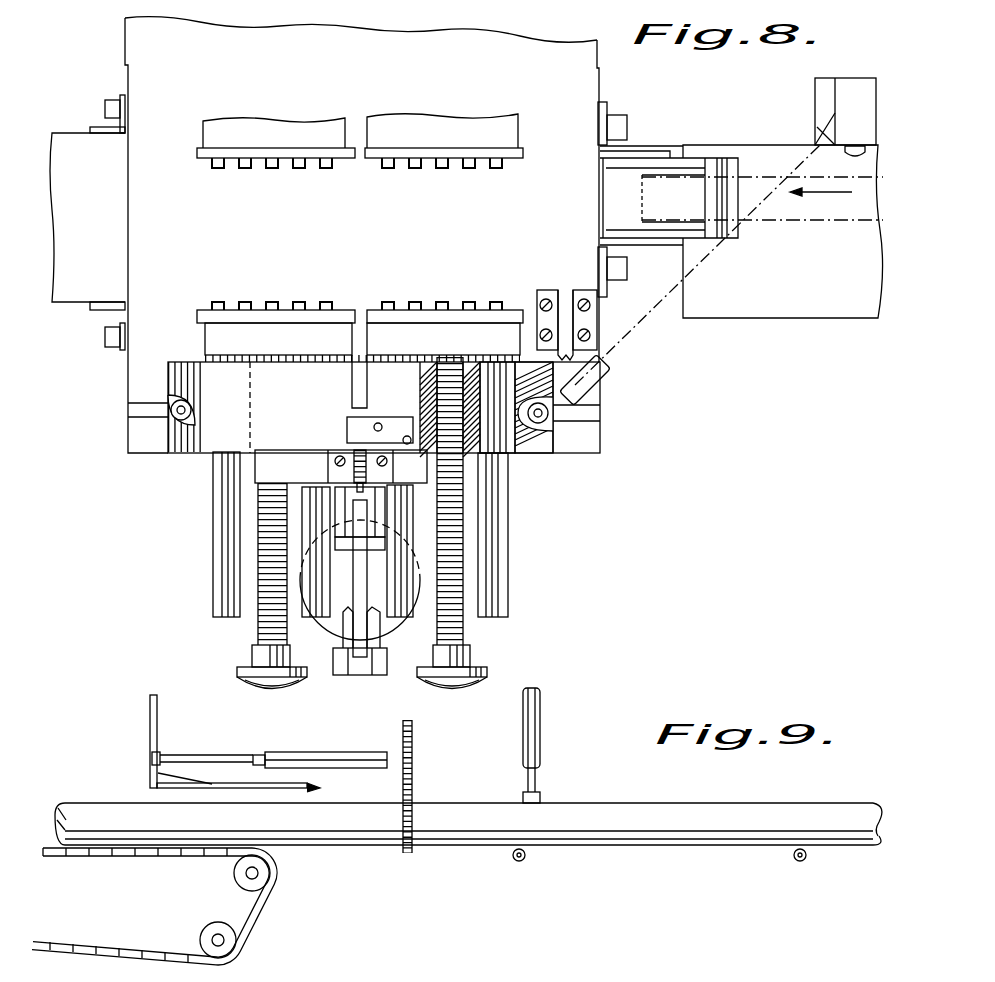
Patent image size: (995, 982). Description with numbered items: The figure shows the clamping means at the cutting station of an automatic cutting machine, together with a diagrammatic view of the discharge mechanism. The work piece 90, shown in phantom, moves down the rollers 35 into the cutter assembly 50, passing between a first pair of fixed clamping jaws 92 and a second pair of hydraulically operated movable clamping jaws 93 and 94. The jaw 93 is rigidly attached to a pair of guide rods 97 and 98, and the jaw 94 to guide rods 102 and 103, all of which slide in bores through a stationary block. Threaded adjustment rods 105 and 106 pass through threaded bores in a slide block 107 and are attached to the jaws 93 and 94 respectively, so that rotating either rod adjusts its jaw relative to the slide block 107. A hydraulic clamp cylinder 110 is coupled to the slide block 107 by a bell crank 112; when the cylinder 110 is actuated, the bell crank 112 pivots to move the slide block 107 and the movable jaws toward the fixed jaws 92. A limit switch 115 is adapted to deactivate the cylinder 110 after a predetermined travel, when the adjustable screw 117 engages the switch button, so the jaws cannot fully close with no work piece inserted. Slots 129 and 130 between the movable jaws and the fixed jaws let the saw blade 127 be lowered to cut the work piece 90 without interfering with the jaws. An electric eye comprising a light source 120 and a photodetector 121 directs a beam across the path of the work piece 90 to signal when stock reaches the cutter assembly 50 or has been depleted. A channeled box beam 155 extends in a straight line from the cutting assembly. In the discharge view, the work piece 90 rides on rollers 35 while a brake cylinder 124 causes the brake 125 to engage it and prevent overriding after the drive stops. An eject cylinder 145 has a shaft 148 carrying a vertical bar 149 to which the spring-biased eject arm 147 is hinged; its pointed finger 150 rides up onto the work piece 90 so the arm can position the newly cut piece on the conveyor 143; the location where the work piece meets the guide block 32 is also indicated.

In FIG. 8, the guide block 32 is at (762, 318).
In FIG. 8, the rollers 35 is at (710, 170).
In FIG. 9, the rollers 35 is at (525, 860).
In FIG. 8, the cutter assembly 50 is at (617, 437).
In FIG. 8, the work piece 90 is at (807, 220).
In FIG. 9, the work piece 90 is at (660, 853).
In FIG. 8, the fixed clamping jaws 92 is at (278, 168).
In FIG. 8, the movable clamping jaw 93 is at (233, 302).
In FIG. 8, the movable clamping jaw 94 is at (397, 300).
In FIG. 8, the guide rod 97 is at (213, 577).
In FIG. 8, the guide rod 98 is at (305, 520).
In FIG. 8, the guide rod 102 is at (410, 517).
In FIG. 8, the guide rod 103 is at (510, 552).
In FIG. 8, the threaded adjustment rod 105 is at (257, 633).
In FIG. 8, the threaded adjustment rod 106 is at (467, 640).
In FIG. 8, the slide block 107 is at (257, 462).
In FIG. 8, the hydraulic clamp cylinder 110 is at (400, 657).
In FIG. 8, the bell crank 112 is at (365, 587).
In FIG. 8, the limit switch 115 is at (350, 427).
In FIG. 8, the adjustable screw 117 is at (357, 453).
In FIG. 8, the light source 120 is at (603, 377).
In FIG. 8, the photodetector 121 is at (830, 120).
In FIG. 9, the brake cylinder 124 is at (540, 703).
In FIG. 9, the brake 125 is at (540, 792).
In FIG. 9, the saw blade 127 is at (412, 780).
In FIG. 8, the slot 129 is at (385, 280).
In FIG. 8, the slot 130 is at (360, 157).
In FIG. 9, the conveyor 143 is at (270, 912).
In FIG. 9, the eject cylinder 145 is at (300, 752).
In FIG. 9, the eject arm 147 is at (250, 788).
In FIG. 9, the shaft 148 is at (210, 735).
In FIG. 9, the vertical bar 149 is at (150, 720).
In FIG. 9, the pointed finger 150 is at (267, 788).
In FIG. 8, the channeled box beam 155 is at (68, 300).